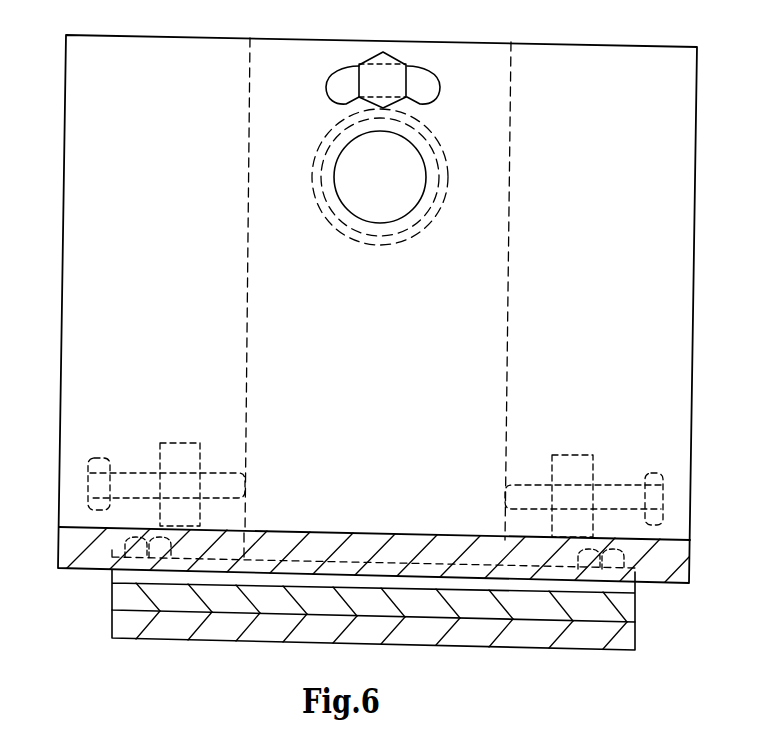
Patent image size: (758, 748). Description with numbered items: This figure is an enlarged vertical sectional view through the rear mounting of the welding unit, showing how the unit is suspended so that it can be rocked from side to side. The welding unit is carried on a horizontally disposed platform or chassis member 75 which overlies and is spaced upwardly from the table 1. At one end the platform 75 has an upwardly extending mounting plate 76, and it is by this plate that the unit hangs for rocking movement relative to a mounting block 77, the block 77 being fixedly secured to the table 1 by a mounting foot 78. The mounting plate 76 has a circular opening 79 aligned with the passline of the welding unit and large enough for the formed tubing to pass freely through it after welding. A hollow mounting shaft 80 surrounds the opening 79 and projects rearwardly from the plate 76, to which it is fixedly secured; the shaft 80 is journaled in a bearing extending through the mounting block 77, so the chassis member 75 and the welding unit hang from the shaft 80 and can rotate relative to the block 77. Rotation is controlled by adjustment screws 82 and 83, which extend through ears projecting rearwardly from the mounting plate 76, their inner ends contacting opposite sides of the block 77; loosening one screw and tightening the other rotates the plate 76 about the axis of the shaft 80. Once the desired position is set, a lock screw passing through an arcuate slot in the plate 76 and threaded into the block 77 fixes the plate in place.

The table 1 is at (625, 637).
The platform or chassis member 75 is at (283, 537).
The mounting plate 76 is at (80, 120).
The mounting block 77 is at (443, 55).
The mounting foot 78 is at (627, 607).
The circular opening 79 is at (355, 142).
The hollow mounting shaft 80 is at (433, 160).
The adjustment screw 82 is at (128, 483).
The adjustment screw 83 is at (612, 495).